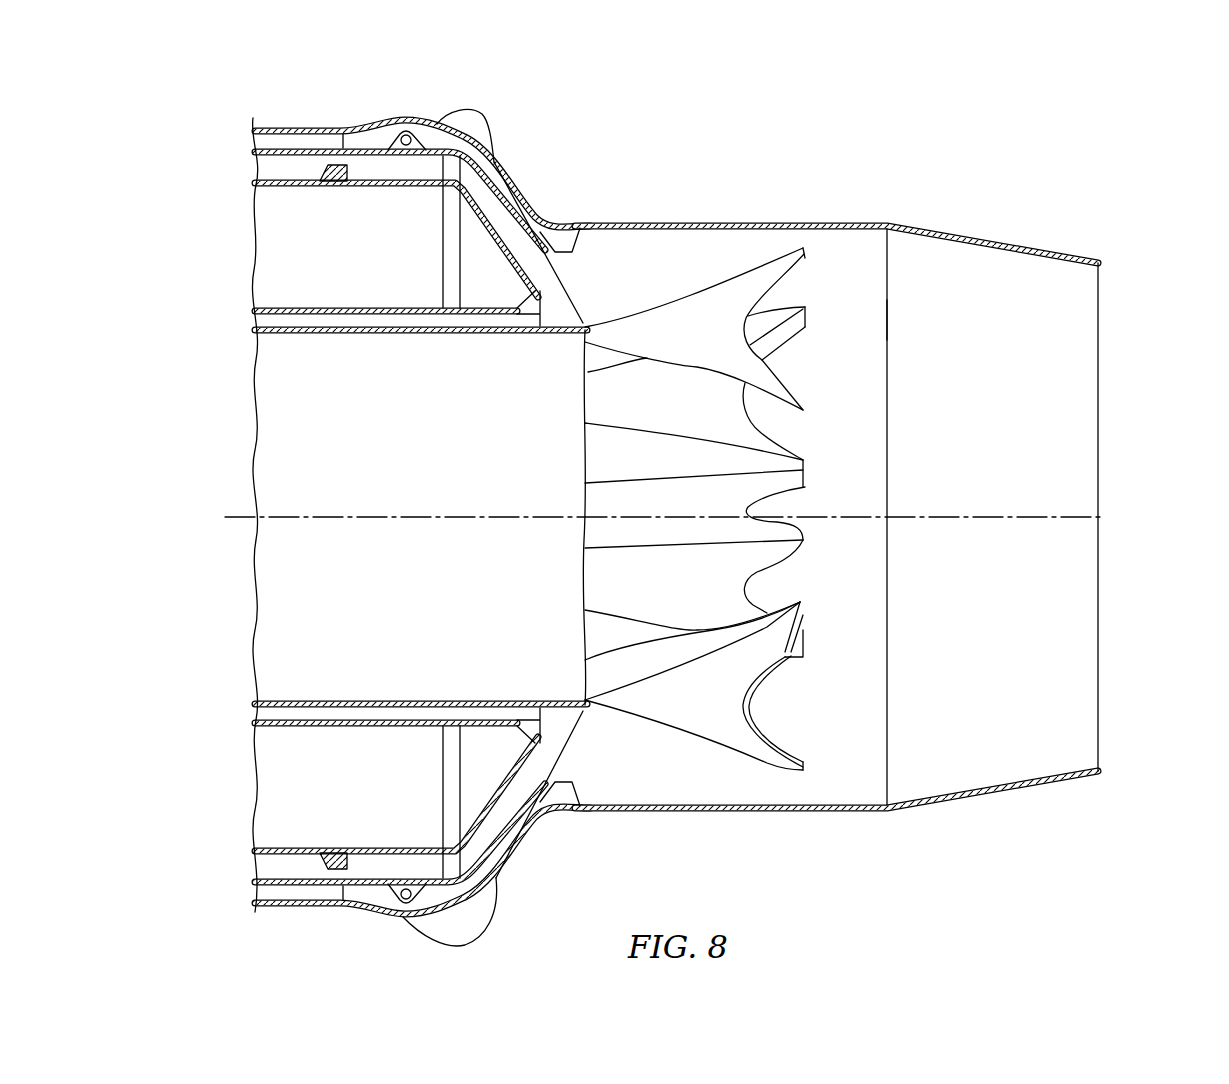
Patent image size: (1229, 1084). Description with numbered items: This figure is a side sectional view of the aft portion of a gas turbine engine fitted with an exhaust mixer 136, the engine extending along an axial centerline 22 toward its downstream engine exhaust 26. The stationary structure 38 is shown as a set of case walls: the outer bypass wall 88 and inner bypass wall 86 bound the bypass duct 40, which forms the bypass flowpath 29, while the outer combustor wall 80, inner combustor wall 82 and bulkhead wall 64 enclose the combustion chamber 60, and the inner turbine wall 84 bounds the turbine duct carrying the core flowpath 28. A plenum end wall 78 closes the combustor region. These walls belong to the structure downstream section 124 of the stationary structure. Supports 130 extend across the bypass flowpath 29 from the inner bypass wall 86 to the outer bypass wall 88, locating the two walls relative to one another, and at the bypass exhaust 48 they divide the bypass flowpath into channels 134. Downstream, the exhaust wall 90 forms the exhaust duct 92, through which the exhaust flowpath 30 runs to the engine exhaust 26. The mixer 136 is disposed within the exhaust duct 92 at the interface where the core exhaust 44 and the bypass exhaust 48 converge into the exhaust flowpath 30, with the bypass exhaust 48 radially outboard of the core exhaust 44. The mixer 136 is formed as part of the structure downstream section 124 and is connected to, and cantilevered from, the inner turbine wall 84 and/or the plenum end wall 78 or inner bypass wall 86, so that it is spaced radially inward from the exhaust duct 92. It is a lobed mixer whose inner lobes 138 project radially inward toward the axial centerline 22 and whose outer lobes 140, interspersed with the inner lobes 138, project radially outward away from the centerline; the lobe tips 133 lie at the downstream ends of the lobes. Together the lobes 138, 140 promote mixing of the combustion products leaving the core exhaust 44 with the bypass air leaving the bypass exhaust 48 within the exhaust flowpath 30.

The axial centerline 22 is at (232, 547).
The engine exhaust 26 is at (1102, 350).
The core flowpath 28 is at (278, 451).
The bypass flowpath 29 is at (270, 146).
The exhaust flowpath 30 is at (969, 451).
The stationary structure 38 is at (893, 172).
The bypass duct 40 is at (333, 118).
The core exhaust 44 is at (578, 600).
The bypass exhaust 48 is at (583, 281).
The combustion chamber 60 is at (371, 262).
The bulkhead wall 64 is at (495, 212).
The plenum end wall 78 is at (503, 155).
The inner bypass wall 86 is at (268, 156).
The outer combustor wall 80 is at (275, 188).
The inner combustor wall 82 is at (275, 306).
The inner turbine wall 84 is at (270, 340).
The outer bypass wall 88 is at (275, 126).
The exhaust wall 90 is at (1028, 247).
The exhaust duct 92 is at (952, 231).
The structure downstream section 124 is at (673, 165).
The support 130 is at (570, 246).
The lobe 133 is at (805, 633).
The channel 134 is at (545, 234).
The exhaust mixer 136 is at (752, 253).
The inner lobe 138 is at (696, 364).
The outer lobe 140 is at (805, 252).